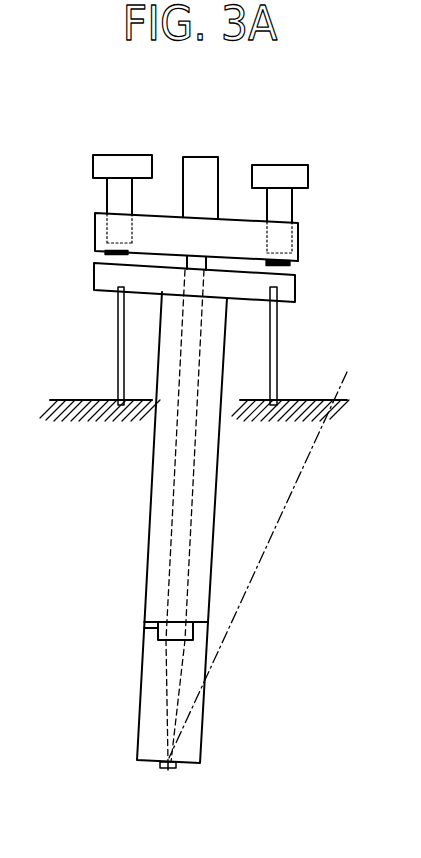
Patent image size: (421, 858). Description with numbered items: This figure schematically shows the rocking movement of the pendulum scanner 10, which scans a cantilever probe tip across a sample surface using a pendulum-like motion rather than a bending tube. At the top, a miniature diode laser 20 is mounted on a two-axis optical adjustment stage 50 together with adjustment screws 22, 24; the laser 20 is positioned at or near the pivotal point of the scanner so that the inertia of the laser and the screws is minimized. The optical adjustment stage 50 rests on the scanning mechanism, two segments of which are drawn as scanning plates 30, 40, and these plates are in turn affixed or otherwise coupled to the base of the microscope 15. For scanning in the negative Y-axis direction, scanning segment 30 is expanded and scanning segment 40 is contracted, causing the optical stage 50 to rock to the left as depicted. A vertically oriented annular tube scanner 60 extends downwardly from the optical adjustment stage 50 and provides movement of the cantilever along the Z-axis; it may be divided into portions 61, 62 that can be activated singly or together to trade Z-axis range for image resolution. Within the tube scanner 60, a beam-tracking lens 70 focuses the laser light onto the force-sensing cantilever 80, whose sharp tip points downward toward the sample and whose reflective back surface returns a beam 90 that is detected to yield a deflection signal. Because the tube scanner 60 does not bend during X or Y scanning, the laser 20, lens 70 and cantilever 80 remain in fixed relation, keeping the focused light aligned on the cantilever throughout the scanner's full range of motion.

The pendulum scanner 10 is at (323, 230).
The base of the microscope 15 is at (102, 433).
The miniature diode laser 20 is at (205, 165).
The adjustment screw 22 is at (113, 158).
The adjustment screw 24 is at (282, 167).
The scanning segment or plate 30 is at (118, 342).
The scanning segment or plate 40 is at (278, 340).
The two-axis optical adjustment stage 50 is at (177, 127).
The annular tube scanner 60 is at (152, 500).
The scanning tube portion 61 is at (147, 565).
The scanning tube portion 62 is at (138, 705).
The lens 70 is at (150, 628).
The force-sensing cantilever 80 is at (160, 771).
The beam 90 is at (270, 537).